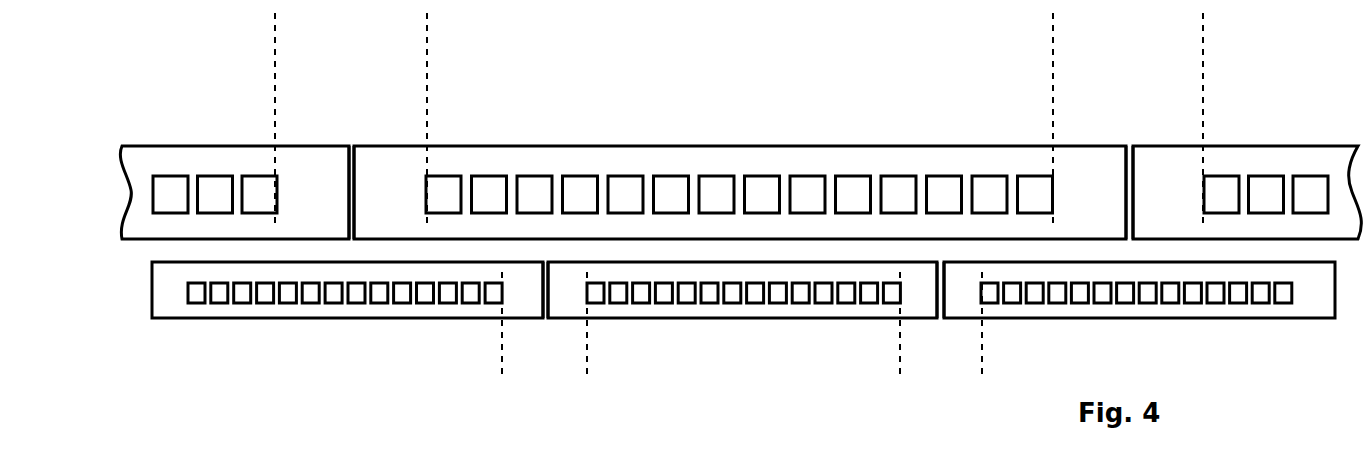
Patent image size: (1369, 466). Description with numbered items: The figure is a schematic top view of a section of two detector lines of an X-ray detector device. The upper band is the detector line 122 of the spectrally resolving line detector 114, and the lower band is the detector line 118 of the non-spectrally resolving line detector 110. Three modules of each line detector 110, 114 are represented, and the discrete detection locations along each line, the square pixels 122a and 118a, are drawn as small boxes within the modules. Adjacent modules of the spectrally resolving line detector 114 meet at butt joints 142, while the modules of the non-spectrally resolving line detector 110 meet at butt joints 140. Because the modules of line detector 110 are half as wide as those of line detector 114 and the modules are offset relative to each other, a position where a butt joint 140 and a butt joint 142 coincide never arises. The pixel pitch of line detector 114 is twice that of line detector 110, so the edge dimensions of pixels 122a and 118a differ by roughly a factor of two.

The detector line 122 is at (116, 141).
The spectrally resolving line detector 114 is at (225, 155).
The pixels 122a is at (538, 182).
The butt joint 142 is at (350, 143).
The detector line 118 is at (151, 301).
The non-spectrally resolving line detector 110 is at (343, 307).
The pixels 118a is at (665, 300).
The butt joint 140 is at (544, 321).